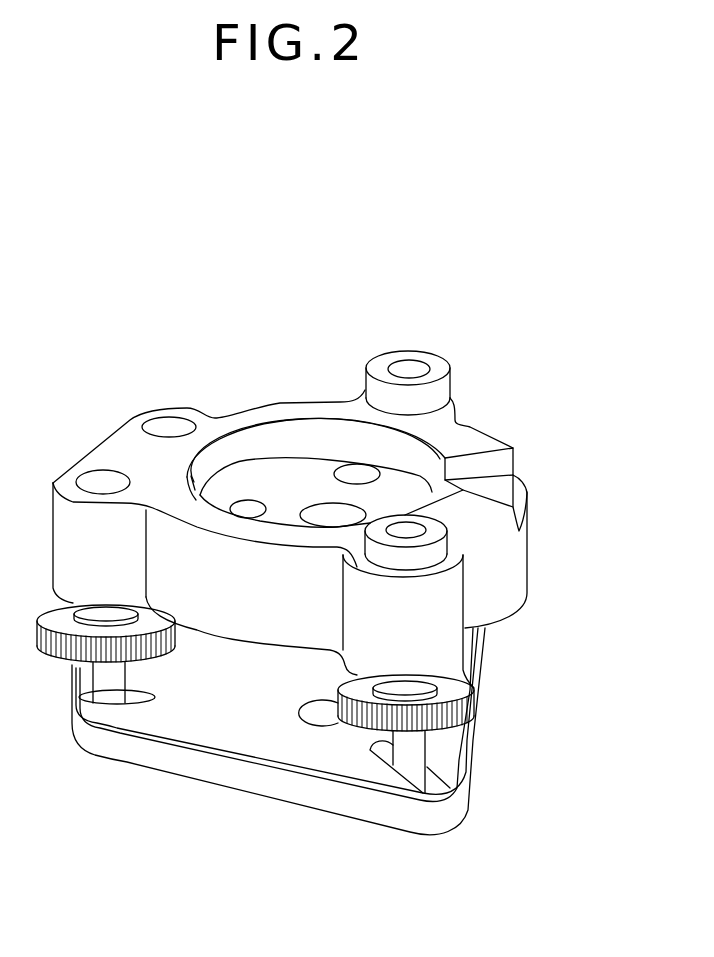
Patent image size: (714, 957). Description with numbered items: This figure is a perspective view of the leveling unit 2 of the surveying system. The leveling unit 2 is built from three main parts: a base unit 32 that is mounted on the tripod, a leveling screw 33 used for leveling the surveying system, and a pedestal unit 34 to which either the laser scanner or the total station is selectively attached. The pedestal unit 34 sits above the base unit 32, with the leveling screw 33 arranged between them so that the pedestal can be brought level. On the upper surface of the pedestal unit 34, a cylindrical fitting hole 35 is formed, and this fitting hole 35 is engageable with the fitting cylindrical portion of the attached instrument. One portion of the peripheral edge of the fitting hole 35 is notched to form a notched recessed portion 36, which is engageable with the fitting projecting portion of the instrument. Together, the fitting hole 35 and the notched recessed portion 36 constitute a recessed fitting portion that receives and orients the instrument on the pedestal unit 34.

The leveling unit 2 is at (108, 437).
The base unit 32 is at (182, 778).
The leveling screw 33 is at (478, 700).
The pedestal unit 34 is at (477, 427).
The fitting hole 35 is at (276, 457).
The notched recessed portion 36 is at (526, 490).